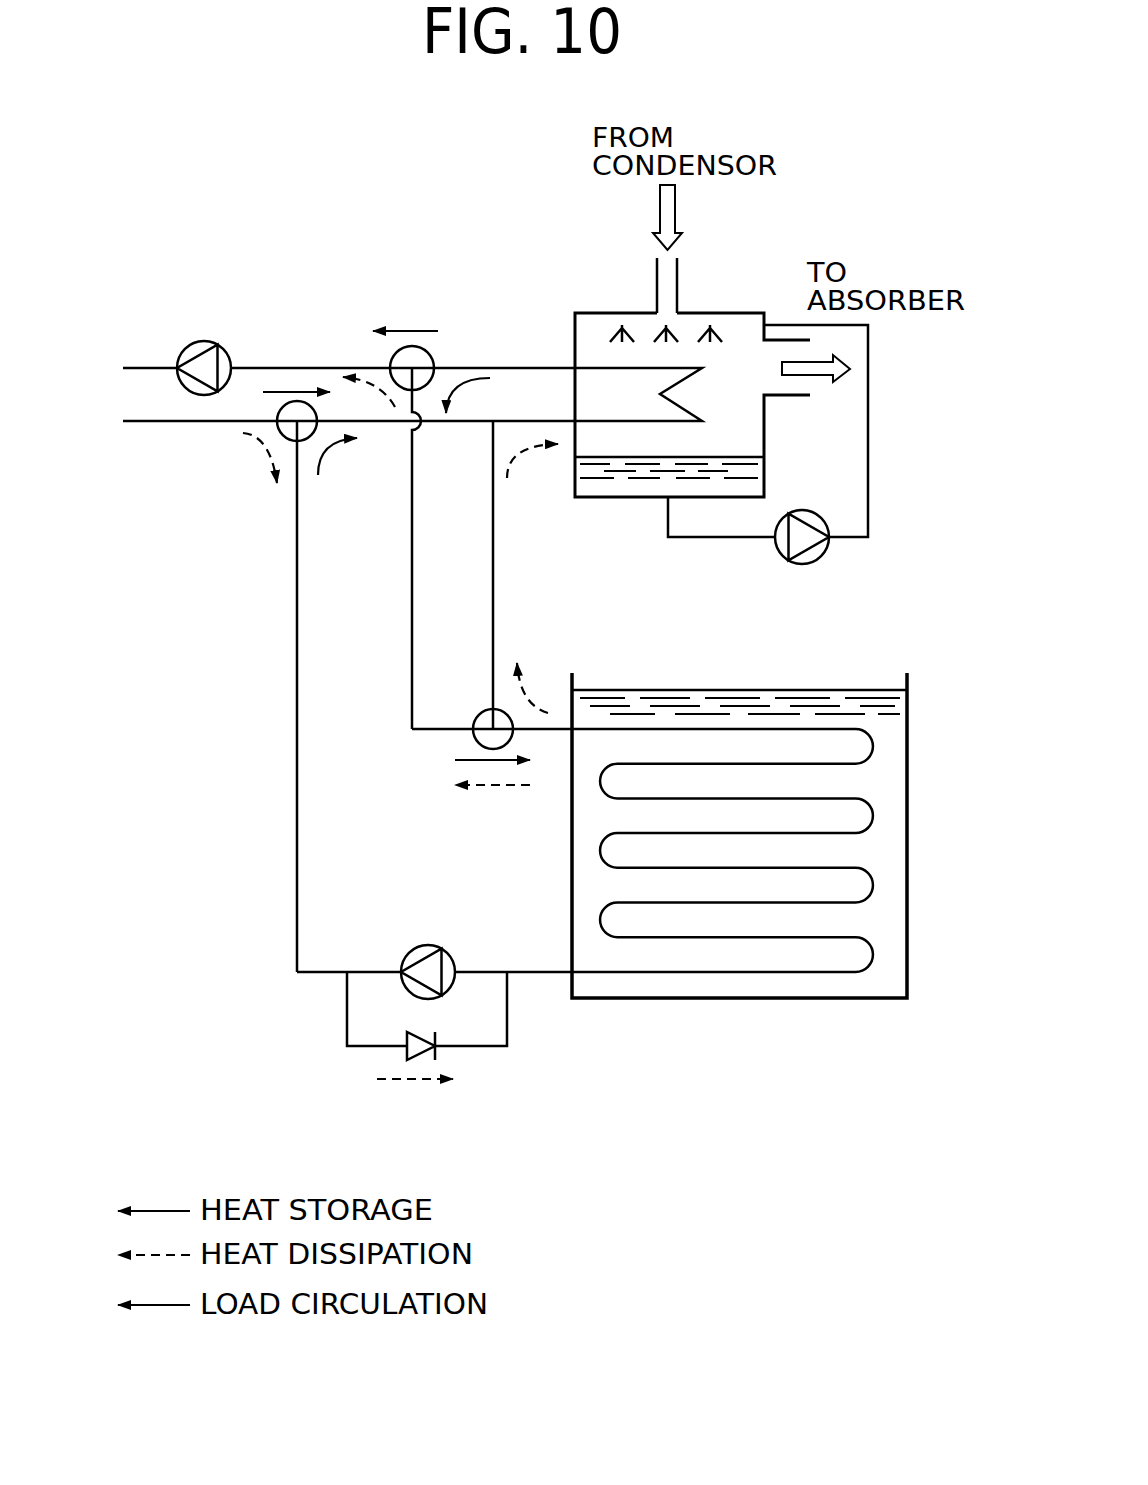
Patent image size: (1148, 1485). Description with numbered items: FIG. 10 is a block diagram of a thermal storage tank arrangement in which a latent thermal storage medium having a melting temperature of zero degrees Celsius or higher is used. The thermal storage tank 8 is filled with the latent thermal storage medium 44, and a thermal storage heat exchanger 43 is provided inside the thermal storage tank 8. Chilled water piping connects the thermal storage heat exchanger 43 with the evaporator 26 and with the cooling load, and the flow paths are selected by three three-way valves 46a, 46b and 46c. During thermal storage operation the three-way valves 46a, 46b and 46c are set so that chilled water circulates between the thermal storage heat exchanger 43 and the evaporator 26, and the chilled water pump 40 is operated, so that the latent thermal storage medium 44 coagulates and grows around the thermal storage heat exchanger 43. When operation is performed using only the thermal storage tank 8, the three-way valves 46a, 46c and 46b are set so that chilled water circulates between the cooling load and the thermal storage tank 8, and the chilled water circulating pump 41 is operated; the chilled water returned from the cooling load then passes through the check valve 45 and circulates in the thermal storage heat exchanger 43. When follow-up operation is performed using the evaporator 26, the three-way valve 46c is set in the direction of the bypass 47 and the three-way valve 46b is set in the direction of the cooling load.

The thermal storage tank 8 is at (739, 857).
The evaporator 26 is at (730, 313).
The chilled water pump 40 is at (430, 945).
The chilled water circulating pump 41 is at (204, 341).
The thermal storage heat exchanger 43 is at (718, 729).
The latent thermal storage medium 44 is at (853, 980).
The check valve 45 is at (405, 1042).
The three-way valve 46a is at (277, 414).
The three-way valve 46b is at (412, 346).
The three-way valve 46c is at (476, 736).
The bypass 47 is at (494, 552).